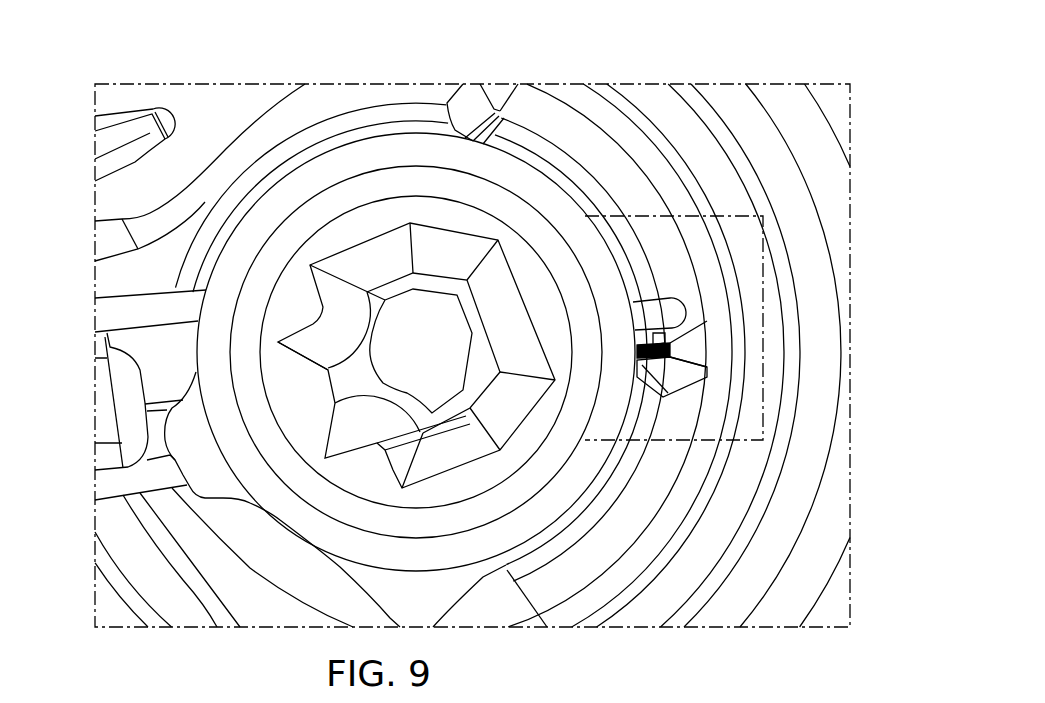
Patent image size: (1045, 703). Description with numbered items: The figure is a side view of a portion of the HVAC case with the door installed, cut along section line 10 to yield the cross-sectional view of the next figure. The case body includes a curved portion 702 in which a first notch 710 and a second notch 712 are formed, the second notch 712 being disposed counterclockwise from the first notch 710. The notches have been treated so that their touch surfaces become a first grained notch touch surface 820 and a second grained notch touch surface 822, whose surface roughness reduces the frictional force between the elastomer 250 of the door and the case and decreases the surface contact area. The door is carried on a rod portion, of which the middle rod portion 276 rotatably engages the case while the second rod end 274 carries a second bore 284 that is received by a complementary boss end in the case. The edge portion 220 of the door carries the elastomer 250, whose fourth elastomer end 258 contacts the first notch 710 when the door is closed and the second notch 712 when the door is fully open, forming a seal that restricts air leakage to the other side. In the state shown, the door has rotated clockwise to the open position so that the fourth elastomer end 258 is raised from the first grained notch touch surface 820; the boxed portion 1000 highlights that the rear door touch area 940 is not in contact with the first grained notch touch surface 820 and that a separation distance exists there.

The section line 10 is at (585, 216).
The edge portion 220 is at (138, 318).
The elastomer 250 is at (133, 405).
The fourth elastomer end 258 is at (668, 312).
The second rod end 274 is at (325, 217).
The middle rod portion 276 is at (360, 118).
The second bore 284 is at (462, 368).
The curved portion 702 is at (617, 143).
The first notch 710 is at (672, 377).
The second notch 712 is at (492, 93).
The first grained notch touch surface 820 is at (672, 352).
The second grained notch touch surface 822 is at (537, 99).
The rear door touch area 940 is at (672, 345).
The portion 1000 is at (740, 246).